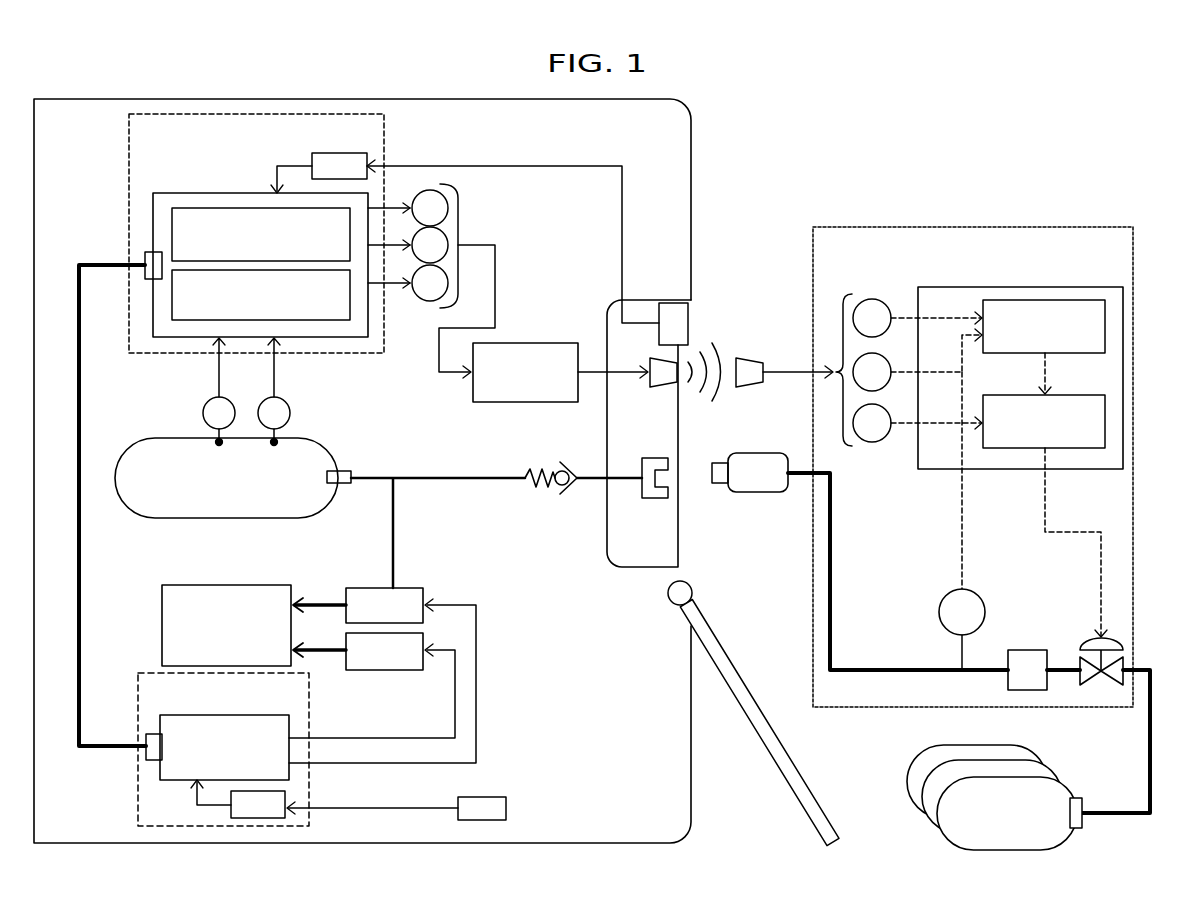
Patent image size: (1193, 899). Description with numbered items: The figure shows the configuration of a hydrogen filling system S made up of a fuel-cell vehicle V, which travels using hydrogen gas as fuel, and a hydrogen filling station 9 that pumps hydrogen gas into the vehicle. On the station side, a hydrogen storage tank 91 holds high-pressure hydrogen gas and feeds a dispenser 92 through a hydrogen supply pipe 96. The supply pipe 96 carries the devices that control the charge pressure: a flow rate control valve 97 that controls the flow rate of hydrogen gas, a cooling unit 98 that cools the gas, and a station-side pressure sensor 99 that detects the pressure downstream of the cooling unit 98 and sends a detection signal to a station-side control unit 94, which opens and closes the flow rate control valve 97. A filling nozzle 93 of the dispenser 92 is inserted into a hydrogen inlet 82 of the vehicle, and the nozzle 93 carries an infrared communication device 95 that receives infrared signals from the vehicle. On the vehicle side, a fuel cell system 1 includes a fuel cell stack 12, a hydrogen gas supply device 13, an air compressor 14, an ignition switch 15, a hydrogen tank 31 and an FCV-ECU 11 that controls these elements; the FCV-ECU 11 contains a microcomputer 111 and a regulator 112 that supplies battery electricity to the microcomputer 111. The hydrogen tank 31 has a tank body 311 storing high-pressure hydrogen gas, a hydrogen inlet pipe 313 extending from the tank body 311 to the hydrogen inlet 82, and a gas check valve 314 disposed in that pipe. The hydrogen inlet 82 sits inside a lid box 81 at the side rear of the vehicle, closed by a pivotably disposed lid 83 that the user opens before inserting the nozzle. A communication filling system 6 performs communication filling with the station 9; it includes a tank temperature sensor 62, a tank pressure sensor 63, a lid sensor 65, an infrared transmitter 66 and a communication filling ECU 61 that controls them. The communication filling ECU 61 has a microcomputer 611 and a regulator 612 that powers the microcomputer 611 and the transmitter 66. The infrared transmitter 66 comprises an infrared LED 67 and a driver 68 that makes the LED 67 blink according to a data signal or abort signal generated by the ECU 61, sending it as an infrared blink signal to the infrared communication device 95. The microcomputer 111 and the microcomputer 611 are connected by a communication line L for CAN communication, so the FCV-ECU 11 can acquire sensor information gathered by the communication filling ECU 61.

The fuel cell system 1 is at (540, 738).
The fuel-cell vehicle V is at (693, 170).
The hydrogen filling system S is at (965, 141).
The communication line L is at (100, 263).
The communication filling system 6 is at (582, 154).
The communication filling ECU 61 is at (129, 172).
The microcomputer 611 is at (188, 193).
The regulator 612 is at (372, 160).
The tank temperature sensor 62 is at (209, 402).
The tank pressure sensor 63 is at (264, 402).
The lid sensor 65 is at (664, 302).
The infrared transmitter 66 is at (544, 294).
The infrared LED 67 is at (652, 388).
The driver 68 is at (545, 343).
The lid box 81 is at (652, 570).
The hydrogen inlet 82 is at (652, 499).
The lid 83 is at (790, 775).
The hydrogen tank 31 is at (358, 426).
The tank body 311 is at (152, 441).
The hydrogen inlet pipe 313 is at (437, 477).
The gas check valve 314 is at (537, 470).
The FCV-ECU 11 is at (140, 673).
The microcomputer 111 is at (146, 736).
The regulator 112 is at (288, 796).
The fuel cell stack 12 is at (285, 585).
The hydrogen gas supply device 13 is at (408, 586).
The air compressor 14 is at (407, 670).
The ignition switch 15 is at (494, 797).
The hydrogen filling station 9 is at (860, 200).
The hydrogen storage tank 91 is at (988, 775).
The dispenser 92 is at (1092, 227).
The filling nozzle 93 is at (749, 453).
The station-side control unit 94 is at (1078, 287).
The infrared communication device 95 is at (749, 358).
The hydrogen supply pipe 96 is at (920, 669).
The flow rate control valve 97 is at (1085, 645).
The cooling unit 98 is at (1024, 650).
The station-side pressure sensor 99 is at (949, 591).